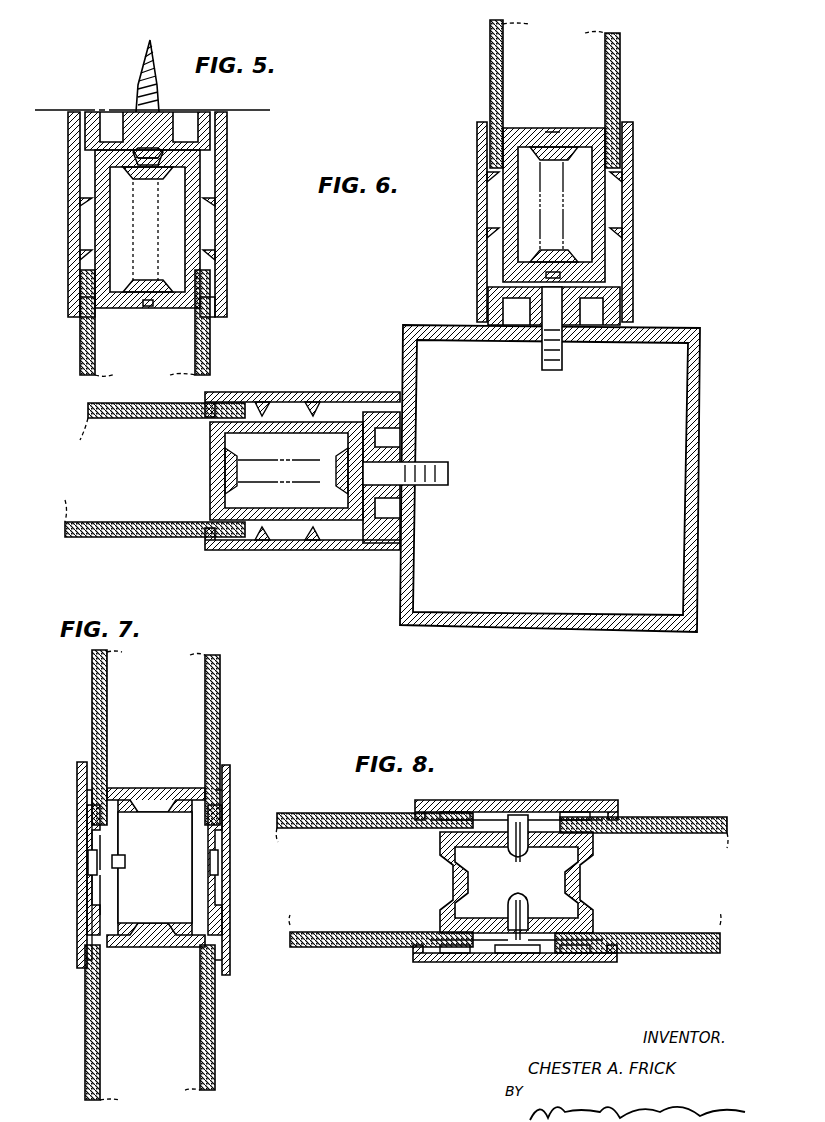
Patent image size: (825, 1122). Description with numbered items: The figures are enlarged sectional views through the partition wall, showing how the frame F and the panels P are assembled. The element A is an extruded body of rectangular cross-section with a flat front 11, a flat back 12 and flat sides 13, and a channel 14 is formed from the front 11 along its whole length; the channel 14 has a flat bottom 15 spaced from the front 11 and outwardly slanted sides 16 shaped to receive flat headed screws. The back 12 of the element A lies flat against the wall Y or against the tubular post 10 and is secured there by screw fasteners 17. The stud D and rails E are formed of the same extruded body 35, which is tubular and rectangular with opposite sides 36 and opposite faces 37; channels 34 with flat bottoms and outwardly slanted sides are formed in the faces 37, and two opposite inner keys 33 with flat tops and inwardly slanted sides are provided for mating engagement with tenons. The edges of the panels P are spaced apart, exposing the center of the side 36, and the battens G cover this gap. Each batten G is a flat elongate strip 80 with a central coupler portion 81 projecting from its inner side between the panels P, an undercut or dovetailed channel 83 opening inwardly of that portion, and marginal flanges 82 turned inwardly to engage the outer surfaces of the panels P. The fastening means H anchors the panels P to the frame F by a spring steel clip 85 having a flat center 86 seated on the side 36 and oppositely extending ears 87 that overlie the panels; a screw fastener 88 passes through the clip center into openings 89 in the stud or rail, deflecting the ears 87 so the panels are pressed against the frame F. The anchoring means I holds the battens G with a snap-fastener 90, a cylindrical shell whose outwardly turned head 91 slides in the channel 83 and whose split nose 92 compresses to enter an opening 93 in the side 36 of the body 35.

In FIG. 6, the post 10 is at (598, 630).
In FIG. 5, the front 11 is at (205, 155).
In FIG. 5, the back 12 is at (208, 118).
In FIG. 5, the sides 13 is at (85, 137).
In FIG. 5, the channel 14 is at (130, 178).
In FIG. 5, the flat bottom 15 is at (153, 176).
In FIG. 5, the slanted sides 16 is at (163, 178).
In FIG. 5, the screw fasteners 17 is at (152, 54).
In FIG. 8, the inner keys 33 is at (564, 883).
In FIG. 8, the channels 34 is at (452, 883).
In FIG. 8, the extruded body 35 is at (596, 856).
In FIG. 7, the sides 36 is at (100, 792).
In FIG. 8, the sides 36 is at (568, 812).
In FIG. 8, the faces 37 is at (442, 850).
In FIG. 7, the strip 80 is at (228, 808).
In FIG. 8, the strip 80 is at (562, 962).
In FIG. 7, the coupler portion 81 is at (215, 843).
In FIG. 8, the coupler portion 81 is at (490, 948).
In FIG. 7, the marginal flanges 82 is at (222, 770).
In FIG. 8, the marginal flanges 82 is at (413, 957).
In FIG. 7, the dovetailed channel 83 is at (218, 880).
In FIG. 8, the dovetailed channel 83 is at (515, 953).
In FIG. 7, the clip 85 is at (108, 845).
In FIG. 7, the flat center 86 is at (100, 880).
In FIG. 7, the ears 87 is at (88, 820).
In FIG. 7, the screw fastener 88 is at (92, 857).
In FIG. 7, the openings 89 is at (125, 862).
In FIG. 8, the snap-fastener 90 is at (520, 812).
In FIG. 8, the head 91 is at (522, 815).
In FIG. 8, the nose 92 is at (530, 855).
In FIG. 8, the opening 93 is at (508, 855).
In FIG. 5, the vertical element A is at (110, 110).
In FIG. 6, the vertical element A is at (620, 300).
In FIG. 5, the stud D is at (147, 249).
In FIG. 6, the stud D is at (530, 126).
In FIG. 8, the stud D is at (526, 879).
In FIG. 7, the rail E is at (152, 790).
In FIG. 5, the frame F is at (180, 312).
In FIG. 6, the frame F is at (668, 322).
In FIG. 5, the batten G is at (68, 180).
In FIG. 6, the batten G is at (476, 283).
In FIG. 7, the batten G is at (232, 778).
In FIG. 8, the batten G is at (502, 894).
In FIG. 7, the fastening means H is at (85, 912).
In FIG. 8, the anchoring means I is at (504, 800).
In FIG. 5, the panel P is at (80, 363).
In FIG. 6, the panel P is at (622, 93).
In FIG. 7, the panel P is at (222, 718).
In FIG. 8, the panel P is at (360, 832).
In FIG. 5, the wall Y is at (250, 110).